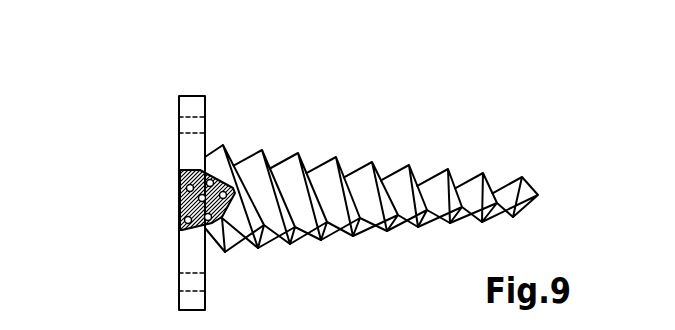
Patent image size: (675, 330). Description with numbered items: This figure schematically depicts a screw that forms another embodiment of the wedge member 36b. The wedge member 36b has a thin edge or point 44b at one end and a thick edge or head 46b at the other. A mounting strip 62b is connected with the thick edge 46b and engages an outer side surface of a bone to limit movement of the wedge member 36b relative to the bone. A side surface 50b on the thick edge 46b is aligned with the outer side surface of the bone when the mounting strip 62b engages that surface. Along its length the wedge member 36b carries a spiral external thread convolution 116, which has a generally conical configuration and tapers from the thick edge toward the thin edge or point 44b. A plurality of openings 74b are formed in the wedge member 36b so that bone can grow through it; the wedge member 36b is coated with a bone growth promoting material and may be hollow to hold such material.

The mounting strip 62b is at (182, 107).
The thick edge or head 46b is at (178, 200).
The side surface 50b is at (180, 222).
The wedge member 36b is at (422, 193).
The openings 74b is at (412, 192).
The spiral external thread convolution 116 is at (353, 234).
The thin edge or point 44b is at (538, 195).